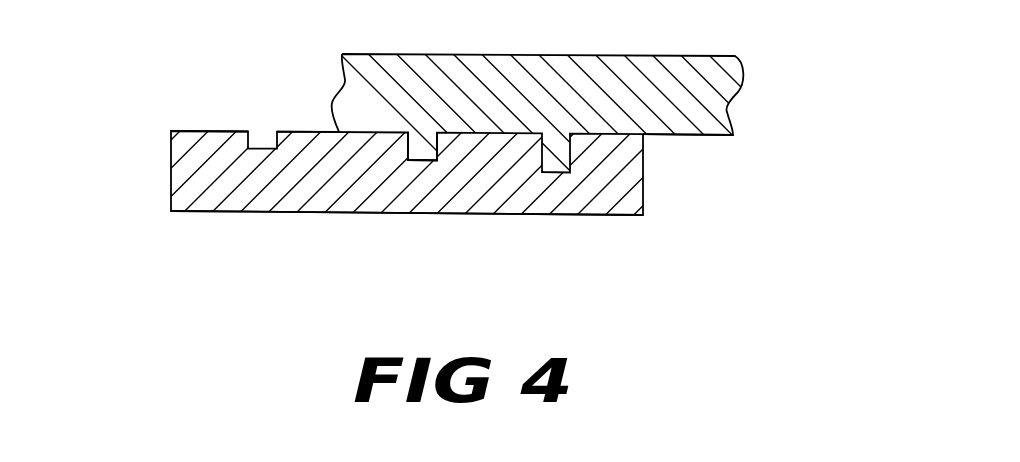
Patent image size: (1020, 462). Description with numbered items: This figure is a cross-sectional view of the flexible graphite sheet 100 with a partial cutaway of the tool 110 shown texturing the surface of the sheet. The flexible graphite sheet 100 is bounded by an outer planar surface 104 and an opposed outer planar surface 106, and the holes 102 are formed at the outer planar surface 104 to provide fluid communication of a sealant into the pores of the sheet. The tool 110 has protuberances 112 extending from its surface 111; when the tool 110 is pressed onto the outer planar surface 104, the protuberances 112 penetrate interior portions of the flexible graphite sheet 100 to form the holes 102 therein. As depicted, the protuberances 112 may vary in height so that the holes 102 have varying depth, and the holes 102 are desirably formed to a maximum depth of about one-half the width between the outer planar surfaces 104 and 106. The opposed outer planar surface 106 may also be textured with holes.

The flexible graphite sheet 100 is at (643, 183).
The holes 102 is at (418, 160).
The outer planar surface 104 is at (195, 131).
The outer planar surface 106 is at (188, 212).
The tool 110 is at (739, 92).
The surface 111 is at (707, 137).
The protuberances 112 is at (405, 158).